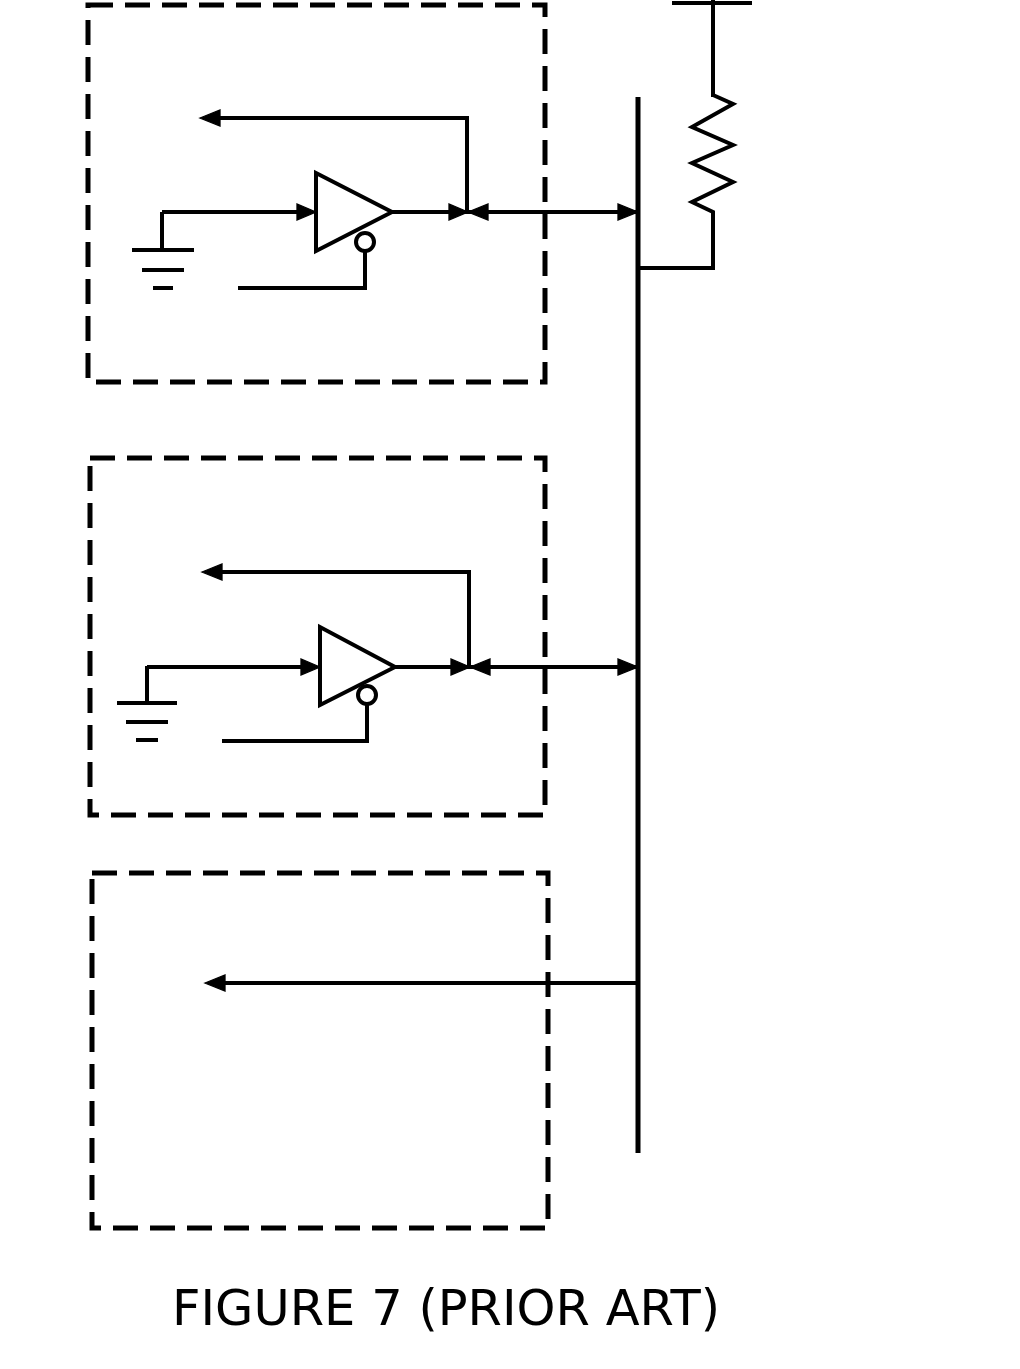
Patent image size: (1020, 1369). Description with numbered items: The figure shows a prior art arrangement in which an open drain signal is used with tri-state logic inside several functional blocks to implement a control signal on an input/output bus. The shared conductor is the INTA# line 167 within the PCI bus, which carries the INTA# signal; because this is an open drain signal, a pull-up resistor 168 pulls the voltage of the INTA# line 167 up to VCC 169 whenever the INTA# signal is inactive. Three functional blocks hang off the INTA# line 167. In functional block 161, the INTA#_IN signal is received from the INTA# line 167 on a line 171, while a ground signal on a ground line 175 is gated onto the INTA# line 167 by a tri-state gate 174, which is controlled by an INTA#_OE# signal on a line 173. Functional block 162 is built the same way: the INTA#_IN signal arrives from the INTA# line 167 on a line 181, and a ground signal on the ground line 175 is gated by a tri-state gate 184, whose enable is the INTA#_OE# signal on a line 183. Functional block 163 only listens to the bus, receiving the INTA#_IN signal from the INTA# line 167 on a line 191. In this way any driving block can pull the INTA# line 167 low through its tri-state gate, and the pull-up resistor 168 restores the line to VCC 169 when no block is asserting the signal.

The functional block 161 is at (415, 384).
The functional block 162 is at (399, 815).
The functional block 163 is at (341, 1230).
The INTA# line 167 is at (641, 360).
The pull-up resistor 168 is at (738, 170).
The VCC 169 is at (676, 5).
The line 171 is at (258, 120).
The line 173 is at (296, 290).
The tri-state gate 174 is at (378, 193).
The ground line 175 is at (165, 306).
The line 181 is at (260, 575).
The line 183 is at (280, 744).
The tri-state gate 184 is at (378, 646).
The line 191 is at (260, 986).